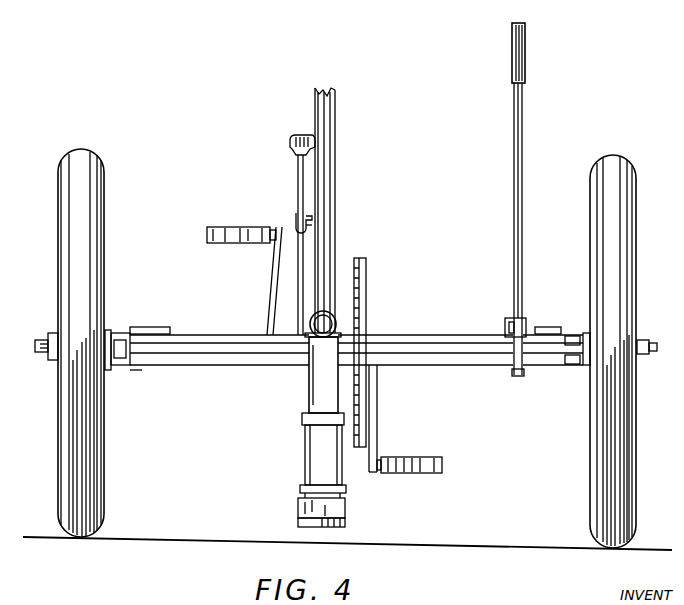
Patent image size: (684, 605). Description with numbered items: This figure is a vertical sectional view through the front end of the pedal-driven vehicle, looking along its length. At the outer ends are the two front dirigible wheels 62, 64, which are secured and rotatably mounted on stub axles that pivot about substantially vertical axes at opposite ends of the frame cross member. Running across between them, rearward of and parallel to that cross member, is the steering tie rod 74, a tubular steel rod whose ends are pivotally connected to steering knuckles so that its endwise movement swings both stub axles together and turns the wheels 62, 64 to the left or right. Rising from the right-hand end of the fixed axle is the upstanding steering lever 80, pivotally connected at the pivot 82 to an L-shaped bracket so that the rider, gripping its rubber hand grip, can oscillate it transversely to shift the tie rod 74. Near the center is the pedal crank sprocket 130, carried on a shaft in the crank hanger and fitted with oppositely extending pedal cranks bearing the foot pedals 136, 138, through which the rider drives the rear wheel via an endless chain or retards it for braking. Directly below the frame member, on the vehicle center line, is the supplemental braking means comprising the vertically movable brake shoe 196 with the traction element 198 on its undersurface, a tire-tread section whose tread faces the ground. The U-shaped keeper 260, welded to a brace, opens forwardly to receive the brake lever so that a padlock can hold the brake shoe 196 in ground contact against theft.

The front dirigible wheel 62 is at (615, 207).
The front dirigible wheel 64 is at (77, 162).
The steering tie rod 74 is at (208, 365).
The steering lever 80 is at (514, 127).
The pivot 82 is at (525, 328).
The sprocket 130 is at (365, 278).
The foot pedal 136 is at (422, 470).
The foot pedal 138 is at (233, 227).
The brake shoe 196 is at (333, 507).
The traction element 198 is at (313, 527).
The U-shaped keeper 260 is at (297, 217).